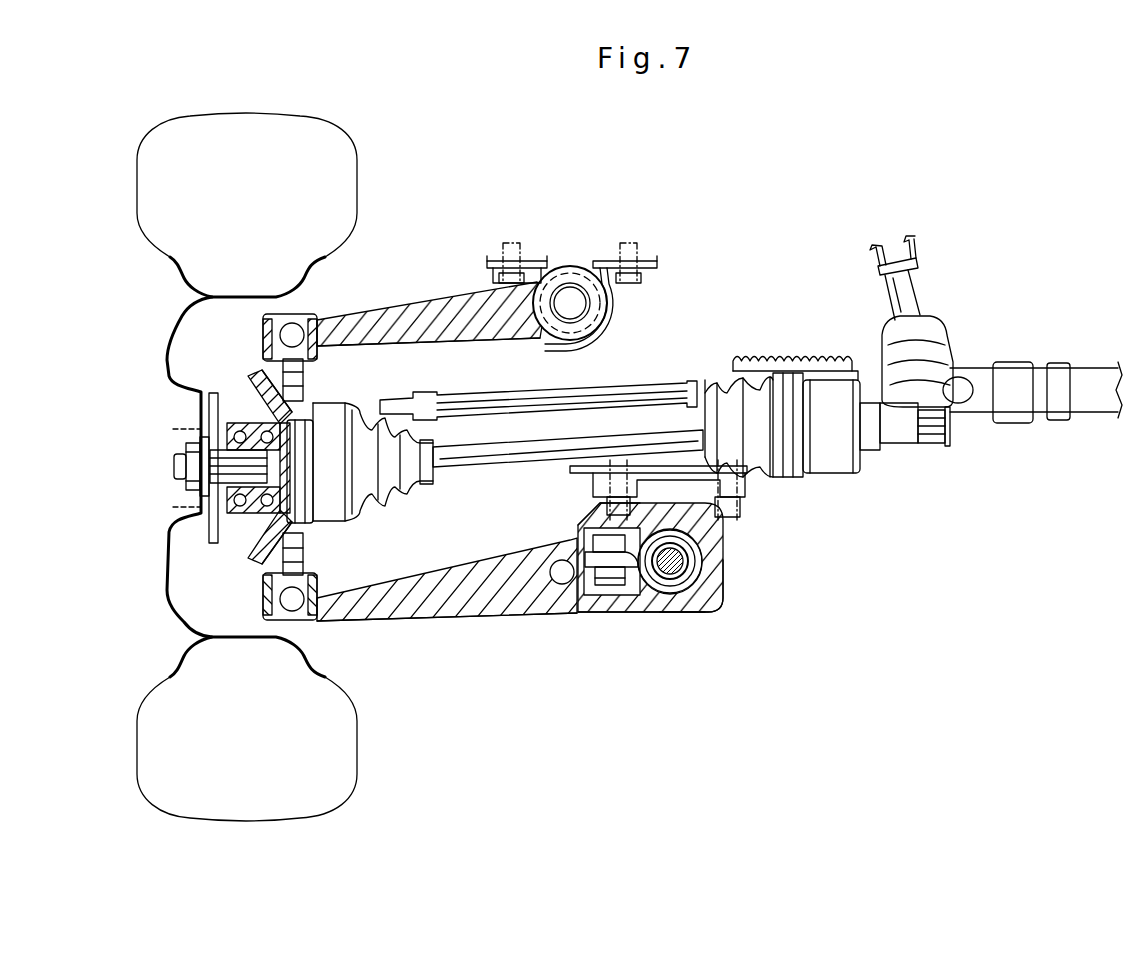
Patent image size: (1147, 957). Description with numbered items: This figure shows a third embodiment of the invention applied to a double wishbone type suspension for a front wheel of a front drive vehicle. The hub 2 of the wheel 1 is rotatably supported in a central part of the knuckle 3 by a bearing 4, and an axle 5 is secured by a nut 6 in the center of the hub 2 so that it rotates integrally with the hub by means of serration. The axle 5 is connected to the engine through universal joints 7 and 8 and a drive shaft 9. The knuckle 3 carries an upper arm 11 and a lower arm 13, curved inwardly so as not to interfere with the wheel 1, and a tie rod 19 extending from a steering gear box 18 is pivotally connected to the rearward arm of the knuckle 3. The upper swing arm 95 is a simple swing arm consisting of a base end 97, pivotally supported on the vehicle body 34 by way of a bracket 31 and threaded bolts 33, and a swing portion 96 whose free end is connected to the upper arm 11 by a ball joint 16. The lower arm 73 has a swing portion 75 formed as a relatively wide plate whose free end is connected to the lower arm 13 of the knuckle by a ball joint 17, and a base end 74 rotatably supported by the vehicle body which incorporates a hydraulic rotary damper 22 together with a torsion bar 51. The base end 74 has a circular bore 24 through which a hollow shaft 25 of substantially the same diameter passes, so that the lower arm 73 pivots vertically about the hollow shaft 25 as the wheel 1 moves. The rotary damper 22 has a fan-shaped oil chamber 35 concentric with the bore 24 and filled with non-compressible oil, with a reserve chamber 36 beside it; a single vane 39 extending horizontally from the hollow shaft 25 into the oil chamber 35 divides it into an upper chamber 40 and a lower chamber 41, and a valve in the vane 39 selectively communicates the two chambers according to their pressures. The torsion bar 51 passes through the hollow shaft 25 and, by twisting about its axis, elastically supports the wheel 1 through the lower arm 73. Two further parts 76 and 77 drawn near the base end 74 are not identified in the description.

The wheel 1 is at (160, 128).
The hub 2 is at (207, 530).
The knuckle 3 is at (250, 395).
The bearing 4 is at (237, 512).
The axle 5 is at (223, 460).
The nut 6 is at (190, 487).
The universal joint 7 is at (345, 528).
The universal joint 8 is at (795, 485).
The drive shaft 9 is at (457, 470).
The upper arm 11 is at (267, 373).
The lower arm 13 is at (262, 555).
The ball joint 16 is at (293, 334).
The ball joint 17 is at (313, 628).
The steering gear box 18 is at (967, 363).
The tie rod 19 is at (613, 385).
The rotary damper 22 is at (612, 614).
The circular bore 24 is at (713, 585).
The hollow shaft 25 is at (687, 602).
The bracket 31 is at (533, 262).
The threaded bolts 33 is at (640, 243).
The vehicle body 34 is at (645, 256).
The oil chamber 35 is at (590, 610).
The reserve chamber 36 is at (560, 559).
The vane 39 is at (593, 561).
The upper chamber 40 is at (597, 528).
The lower chamber 41 is at (627, 598).
The torsion bar 51 is at (688, 560).
The lower arm 73 is at (447, 624).
The base end 74 is at (680, 615).
The swing portion 75 is at (500, 610).
The mounting bracket 76 is at (665, 480).
The mounting bolt 77 is at (740, 513).
The upper swing arm 95 is at (430, 297).
The swing portion 96 is at (388, 346).
The base end 97 is at (620, 315).